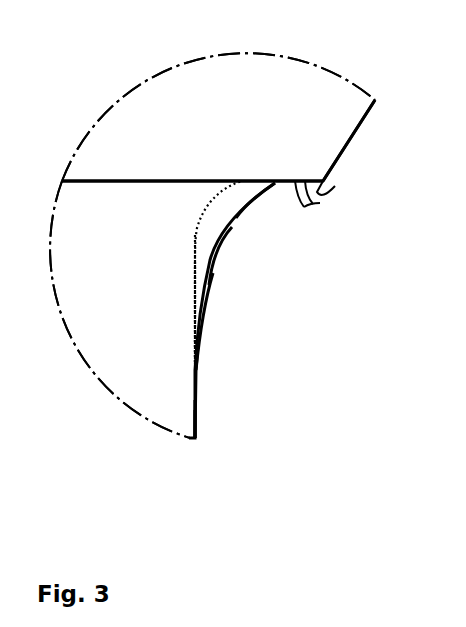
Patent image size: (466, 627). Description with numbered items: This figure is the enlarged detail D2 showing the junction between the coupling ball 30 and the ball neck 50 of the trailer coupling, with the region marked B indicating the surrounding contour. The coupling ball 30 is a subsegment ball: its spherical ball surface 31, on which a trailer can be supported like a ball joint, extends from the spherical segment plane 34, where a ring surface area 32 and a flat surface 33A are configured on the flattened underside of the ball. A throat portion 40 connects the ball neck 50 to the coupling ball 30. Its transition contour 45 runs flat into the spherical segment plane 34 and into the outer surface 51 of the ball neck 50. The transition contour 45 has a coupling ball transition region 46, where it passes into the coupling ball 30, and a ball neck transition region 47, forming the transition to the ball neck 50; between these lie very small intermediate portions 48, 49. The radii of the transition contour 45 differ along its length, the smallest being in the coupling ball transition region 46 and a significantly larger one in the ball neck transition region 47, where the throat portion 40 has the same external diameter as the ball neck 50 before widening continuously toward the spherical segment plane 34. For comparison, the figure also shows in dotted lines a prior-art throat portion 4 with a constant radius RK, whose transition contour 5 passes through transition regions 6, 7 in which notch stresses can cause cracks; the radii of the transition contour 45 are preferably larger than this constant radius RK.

The coupling ball 30 is at (63, 181).
The detail D2 is at (130, 90).
The blade region B is at (95, 309).
The spherical segment plane 34 is at (188, 181).
The ball surface 31 is at (353, 145).
The ring surface area 32 is at (335, 186).
The coupling ball transition region 46 is at (322, 207).
The flat surface 33A is at (320, 203).
The transition contour 45 is at (232, 227).
The portion of transition contour 49 is at (237, 217).
The portion of transition contour 48 is at (213, 273).
The throat portion 40 is at (212, 302).
The ball neck transition region 47 is at (196, 368).
The outer surface 51 is at (197, 432).
The ball neck 50 is at (198, 437).
The ball neck transition region 6 is at (253, 181).
The constant radius RK is at (194, 233).
The throat portion 4 is at (195, 272).
The transition contour 5 is at (195, 305).
The transition region 7 is at (195, 355).